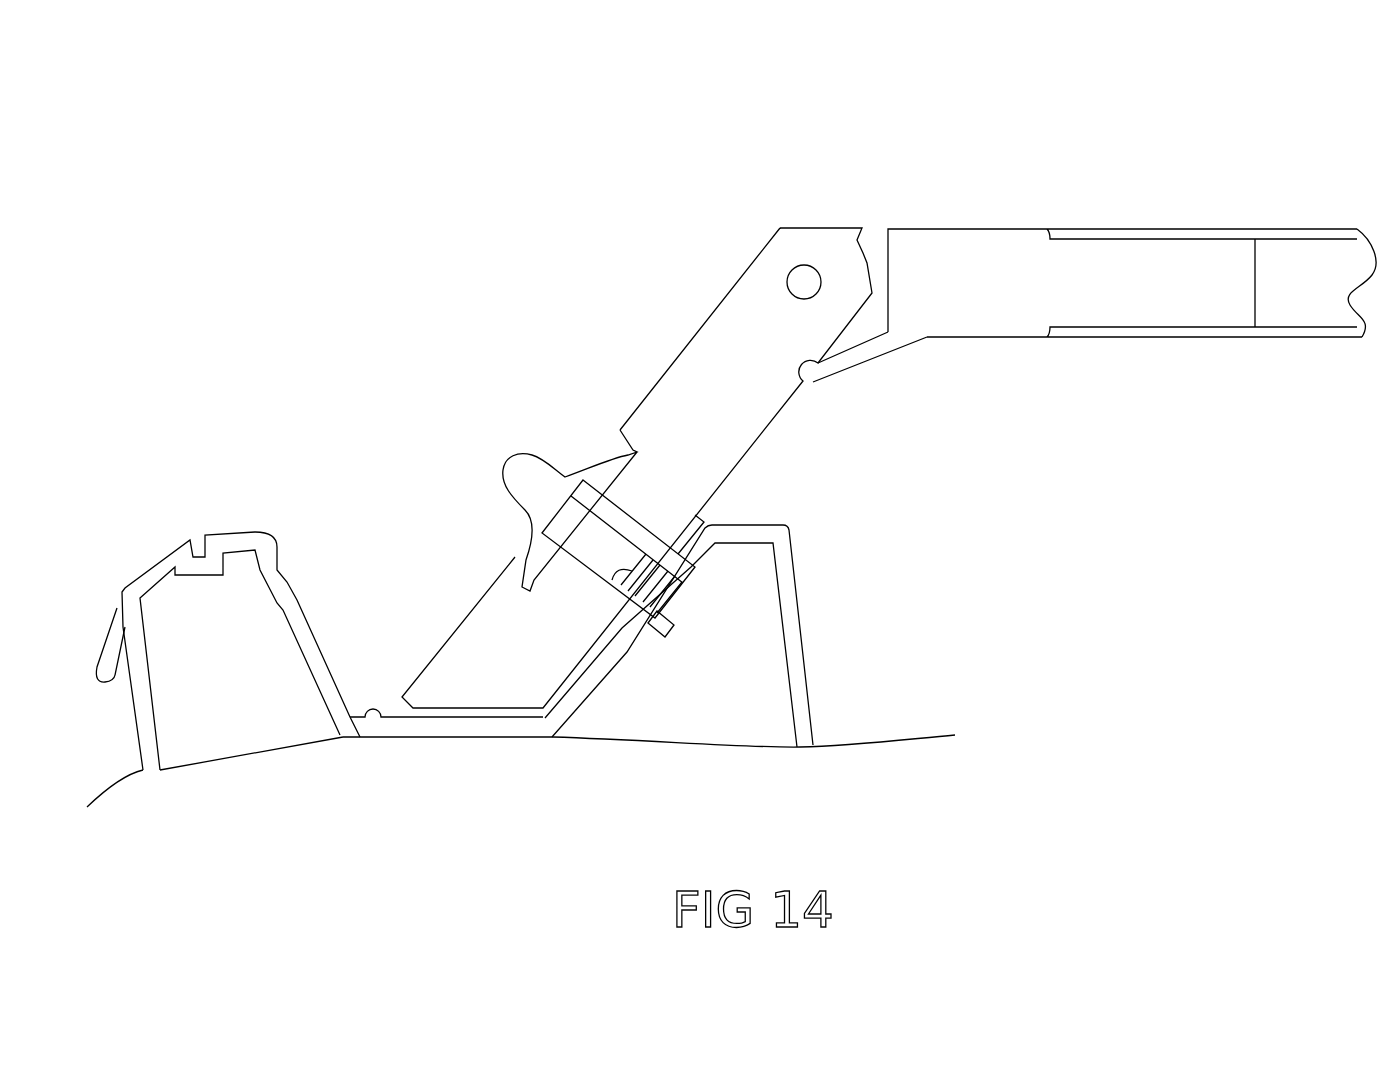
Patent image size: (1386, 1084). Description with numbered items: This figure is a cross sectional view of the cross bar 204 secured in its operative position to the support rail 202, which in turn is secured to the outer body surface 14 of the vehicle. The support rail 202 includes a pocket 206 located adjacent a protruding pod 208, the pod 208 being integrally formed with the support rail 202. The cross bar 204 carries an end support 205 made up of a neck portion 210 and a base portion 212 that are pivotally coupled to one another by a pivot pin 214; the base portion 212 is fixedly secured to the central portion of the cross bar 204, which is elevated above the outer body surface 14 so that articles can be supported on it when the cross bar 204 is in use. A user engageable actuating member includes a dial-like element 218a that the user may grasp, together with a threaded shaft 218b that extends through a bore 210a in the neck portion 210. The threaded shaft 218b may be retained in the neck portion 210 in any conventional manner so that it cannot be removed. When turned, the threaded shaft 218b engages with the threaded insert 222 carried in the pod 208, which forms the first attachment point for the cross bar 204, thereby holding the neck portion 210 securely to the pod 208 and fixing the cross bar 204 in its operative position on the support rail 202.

The outer body surface 14 is at (901, 737).
The support rail 202 is at (155, 528).
The cross bar 204 is at (1272, 203).
The end support 205 is at (972, 190).
The pocket 206 is at (373, 715).
The pod 208 is at (784, 525).
The neck portion 210 is at (603, 451).
The bore 210a is at (615, 570).
The base portion 212 is at (1005, 330).
The pivot pin 214 is at (804, 282).
The dial-like element 218a is at (514, 465).
The threaded shaft 218b is at (628, 540).
The threaded insert 222 is at (670, 627).